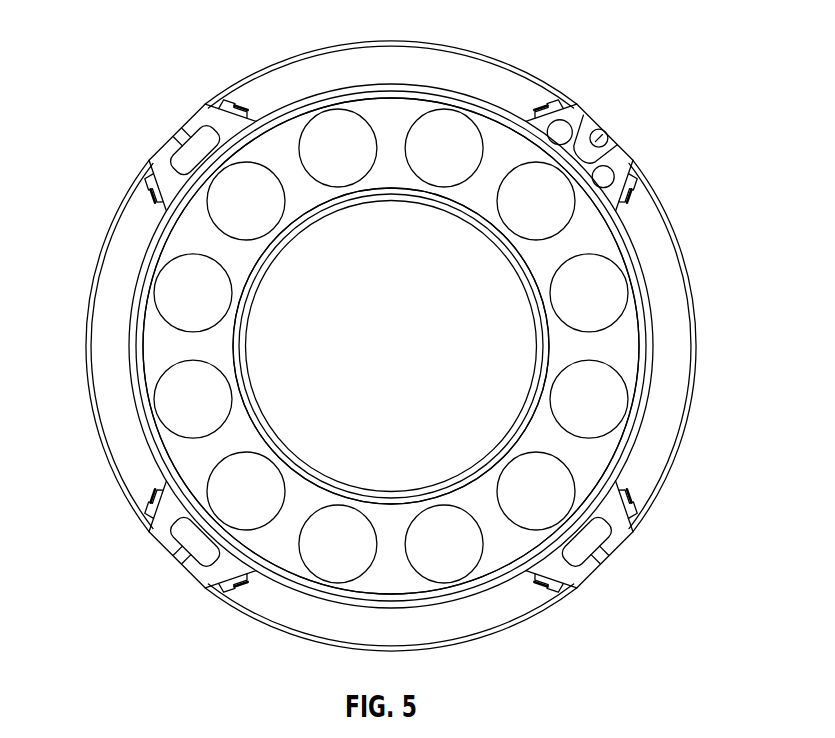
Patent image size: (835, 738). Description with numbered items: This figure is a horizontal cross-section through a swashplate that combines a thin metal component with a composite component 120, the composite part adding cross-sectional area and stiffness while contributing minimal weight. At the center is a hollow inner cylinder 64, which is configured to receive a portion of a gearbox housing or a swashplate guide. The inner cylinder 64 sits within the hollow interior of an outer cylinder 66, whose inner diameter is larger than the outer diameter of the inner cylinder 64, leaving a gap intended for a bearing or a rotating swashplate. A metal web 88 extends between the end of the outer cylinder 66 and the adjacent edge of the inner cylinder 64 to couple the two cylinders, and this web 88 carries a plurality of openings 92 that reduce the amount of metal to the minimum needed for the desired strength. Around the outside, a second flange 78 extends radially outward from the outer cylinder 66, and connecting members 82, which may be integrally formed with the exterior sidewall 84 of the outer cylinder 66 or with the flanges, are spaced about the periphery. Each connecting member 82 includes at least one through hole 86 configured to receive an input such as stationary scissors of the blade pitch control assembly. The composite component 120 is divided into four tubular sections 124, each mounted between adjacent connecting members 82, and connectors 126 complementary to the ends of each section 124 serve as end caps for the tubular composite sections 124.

The hollow inner cylinder 64 is at (482, 217).
The outer cylinder 66 is at (648, 387).
The second flange 78 is at (458, 51).
The connecting member 82 is at (158, 152).
The exterior sidewall 84 is at (103, 447).
The through hole 86 is at (200, 136).
The web 88 is at (292, 562).
The openings 92 is at (338, 567).
The composite component 120 is at (686, 250).
The sections 124 is at (308, 74).
The connectors 126 is at (230, 106).